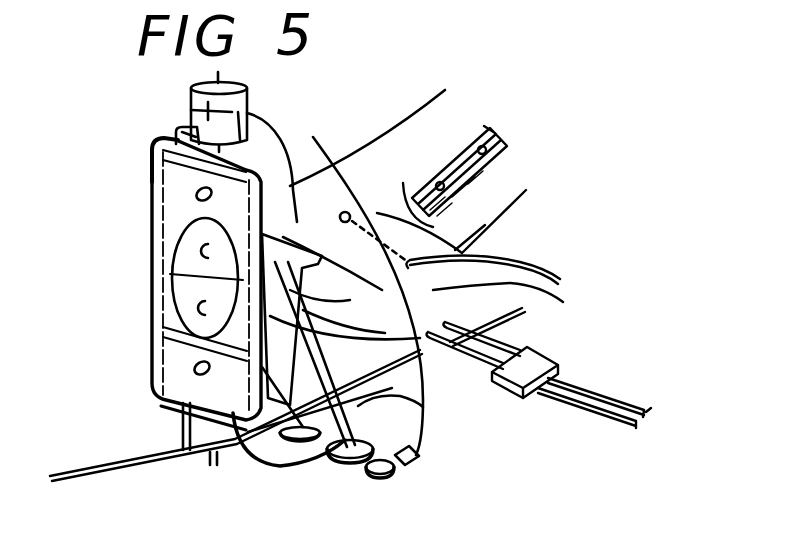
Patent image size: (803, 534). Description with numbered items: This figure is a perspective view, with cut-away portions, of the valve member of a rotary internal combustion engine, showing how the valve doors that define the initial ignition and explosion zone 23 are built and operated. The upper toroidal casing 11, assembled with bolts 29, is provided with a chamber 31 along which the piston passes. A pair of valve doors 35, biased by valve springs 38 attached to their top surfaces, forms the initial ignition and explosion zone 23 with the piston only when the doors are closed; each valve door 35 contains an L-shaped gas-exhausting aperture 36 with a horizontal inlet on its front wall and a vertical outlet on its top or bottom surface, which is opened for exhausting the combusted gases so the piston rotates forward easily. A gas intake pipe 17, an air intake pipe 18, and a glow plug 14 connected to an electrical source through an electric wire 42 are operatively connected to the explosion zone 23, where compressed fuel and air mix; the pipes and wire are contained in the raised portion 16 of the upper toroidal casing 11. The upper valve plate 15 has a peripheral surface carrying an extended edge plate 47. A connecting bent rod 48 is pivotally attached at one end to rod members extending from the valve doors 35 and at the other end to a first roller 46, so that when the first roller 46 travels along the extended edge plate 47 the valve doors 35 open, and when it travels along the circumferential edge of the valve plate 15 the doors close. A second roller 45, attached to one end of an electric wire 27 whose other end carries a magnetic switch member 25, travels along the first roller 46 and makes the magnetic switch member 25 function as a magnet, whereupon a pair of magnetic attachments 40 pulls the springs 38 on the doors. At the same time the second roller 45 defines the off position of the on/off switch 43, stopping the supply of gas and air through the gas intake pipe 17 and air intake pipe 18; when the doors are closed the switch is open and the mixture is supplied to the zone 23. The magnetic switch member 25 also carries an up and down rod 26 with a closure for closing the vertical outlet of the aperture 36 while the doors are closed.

The upper toroidal casing 11 is at (443, 150).
The glow plug 14 is at (490, 244).
The upper valve plate 15 is at (166, 444).
The upper raised portion 16 is at (516, 299).
The gas intake pipe 17 is at (622, 432).
The air intake pipe 18 is at (631, 406).
The initial ignition and explosion zone 23 is at (293, 144).
The magnetic switch member 25 is at (196, 108).
The up and down rod 26 is at (228, 75).
The electric wire 27 is at (322, 158).
The bolt 29 is at (505, 150).
The chamber 31 is at (192, 300).
The valve door 35 is at (160, 196).
The L-shaped gas-exhausting aperture 36 is at (198, 198).
The valve spring 38 is at (148, 168).
The magnetic attachment 40 is at (178, 126).
The electric wire 42 is at (565, 272).
The on/off switch 43 is at (543, 358).
The second roller 45 is at (404, 470).
The first roller 46 is at (345, 466).
The extended edge plate 47 is at (279, 453).
The connecting bent rod 48 is at (407, 401).